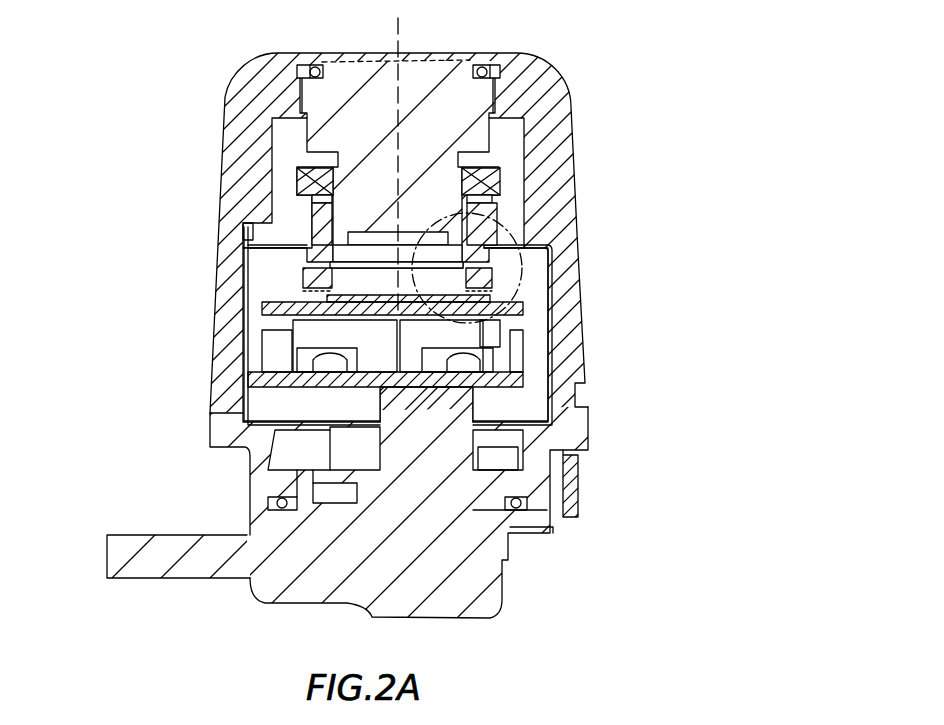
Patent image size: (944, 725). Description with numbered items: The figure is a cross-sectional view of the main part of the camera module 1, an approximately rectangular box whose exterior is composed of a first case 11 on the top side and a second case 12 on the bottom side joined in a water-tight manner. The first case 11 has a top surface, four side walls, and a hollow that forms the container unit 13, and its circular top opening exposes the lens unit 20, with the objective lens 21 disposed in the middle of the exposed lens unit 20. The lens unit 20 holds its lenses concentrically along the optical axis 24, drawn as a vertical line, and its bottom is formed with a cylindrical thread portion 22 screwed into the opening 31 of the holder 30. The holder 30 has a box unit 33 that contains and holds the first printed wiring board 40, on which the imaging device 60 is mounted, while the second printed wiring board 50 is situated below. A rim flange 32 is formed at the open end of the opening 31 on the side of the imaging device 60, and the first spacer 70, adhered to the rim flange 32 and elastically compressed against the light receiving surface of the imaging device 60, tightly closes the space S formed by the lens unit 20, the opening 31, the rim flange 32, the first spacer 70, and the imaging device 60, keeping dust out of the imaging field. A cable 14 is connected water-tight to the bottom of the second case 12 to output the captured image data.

The camera module 1 is at (178, 58).
The first case 11 is at (230, 253).
The second case 12 is at (230, 443).
The container unit 13 is at (283, 155).
The cable 14 is at (208, 556).
The lens unit 20 is at (407, 133).
The objective lens 21 is at (415, 53).
The thread portion 22 is at (437, 213).
The optical axis 24 is at (407, 30).
The holder 30 is at (440, 222).
The opening 31 is at (493, 213).
The rim flange 32 is at (467, 247).
The box unit 33 is at (493, 267).
The first printed wiring board 40 is at (263, 305).
The second printed wiring board 50 is at (248, 370).
The imaging device 60 is at (488, 318).
The first spacer 70 is at (493, 292).
The space S is at (375, 273).